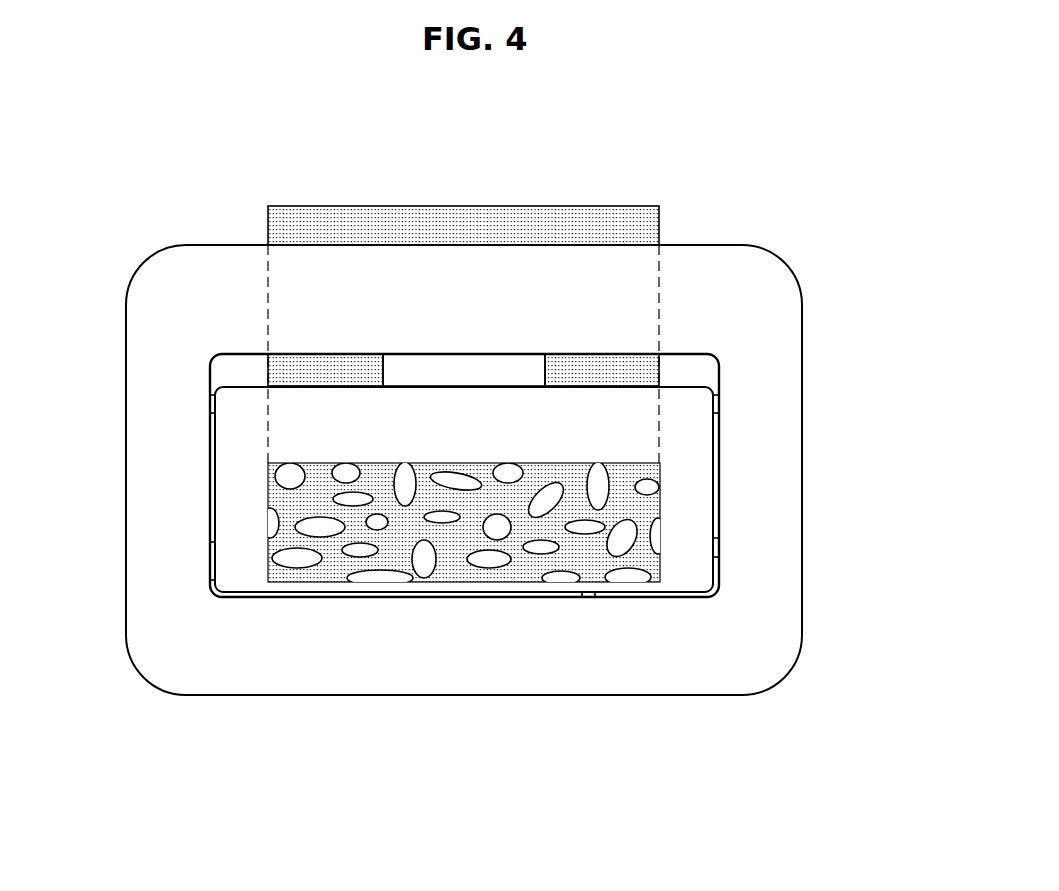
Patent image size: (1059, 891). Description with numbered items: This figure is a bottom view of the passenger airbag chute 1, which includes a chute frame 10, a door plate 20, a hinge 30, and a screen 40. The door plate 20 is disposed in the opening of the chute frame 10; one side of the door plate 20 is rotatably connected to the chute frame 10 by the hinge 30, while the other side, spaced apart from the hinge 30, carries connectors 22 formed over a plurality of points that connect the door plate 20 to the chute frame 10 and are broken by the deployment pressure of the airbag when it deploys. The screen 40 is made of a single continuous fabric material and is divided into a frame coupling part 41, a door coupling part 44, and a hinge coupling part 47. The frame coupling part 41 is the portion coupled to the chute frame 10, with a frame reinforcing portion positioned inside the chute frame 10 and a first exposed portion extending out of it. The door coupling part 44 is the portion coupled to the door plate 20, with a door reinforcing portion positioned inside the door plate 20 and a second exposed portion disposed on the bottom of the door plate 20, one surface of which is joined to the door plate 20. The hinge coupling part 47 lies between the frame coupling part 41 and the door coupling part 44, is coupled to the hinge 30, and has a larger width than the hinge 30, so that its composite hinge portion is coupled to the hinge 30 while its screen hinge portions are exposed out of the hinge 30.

The passenger airbag chute 1 is at (737, 90).
The chute frame 10 is at (768, 424).
The door plate 20 is at (686, 496).
The connectors 22 is at (212, 545).
The hinge 30 is at (540, 362).
The screen 40 is at (264, 371).
The frame coupling part 41 is at (488, 218).
The door coupling part 44 is at (337, 565).
The hinge coupling part 47 is at (322, 367).